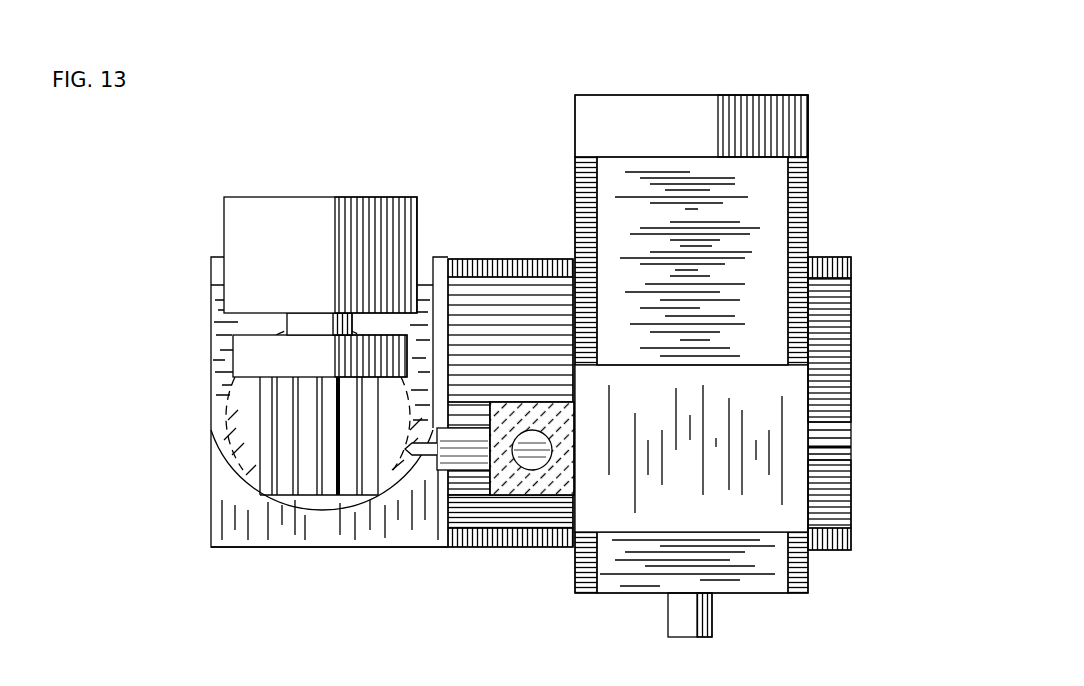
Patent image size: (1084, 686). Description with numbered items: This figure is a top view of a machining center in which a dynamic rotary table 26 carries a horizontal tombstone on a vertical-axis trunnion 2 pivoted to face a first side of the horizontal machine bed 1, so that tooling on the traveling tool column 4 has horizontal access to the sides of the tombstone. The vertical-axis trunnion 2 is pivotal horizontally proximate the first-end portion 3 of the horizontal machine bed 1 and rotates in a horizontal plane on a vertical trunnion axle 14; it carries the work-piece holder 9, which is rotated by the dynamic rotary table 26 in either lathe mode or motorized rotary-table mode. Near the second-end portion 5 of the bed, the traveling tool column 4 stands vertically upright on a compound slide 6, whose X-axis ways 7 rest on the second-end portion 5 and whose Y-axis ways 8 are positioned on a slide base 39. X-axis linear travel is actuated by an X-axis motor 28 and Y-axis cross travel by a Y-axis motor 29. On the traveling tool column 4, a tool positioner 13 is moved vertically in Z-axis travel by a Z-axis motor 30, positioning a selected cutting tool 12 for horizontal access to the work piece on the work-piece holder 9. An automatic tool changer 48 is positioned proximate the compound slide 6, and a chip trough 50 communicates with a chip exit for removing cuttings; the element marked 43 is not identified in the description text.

The horizontal machine bed 1 is at (370, 528).
The vertical-axis trunnion 2 is at (327, 532).
The first-end portion 3 is at (210, 486).
The traveling tool column 4 is at (525, 487).
The second-end portion 5 is at (852, 390).
The compound slide 6 is at (842, 586).
The X-axis ways 7 is at (505, 262).
The Y-axis ways 8 is at (577, 216).
The work-piece holder 9 is at (285, 340).
The cutting tool 12 is at (408, 458).
The tool positioner 13 is at (463, 452).
The vertical trunnion axle 14 is at (285, 333).
The dynamic rotary table 26 is at (224, 197).
The X-axis motor 28 is at (693, 617).
The Y-axis motor 29 is at (848, 446).
The Z-axis motor 30 is at (554, 450).
The slide base 39 is at (712, 216).
The fan blades 43 is at (262, 418).
The automatic tool changer 48 is at (773, 128).
The chip trough 50 is at (485, 343).